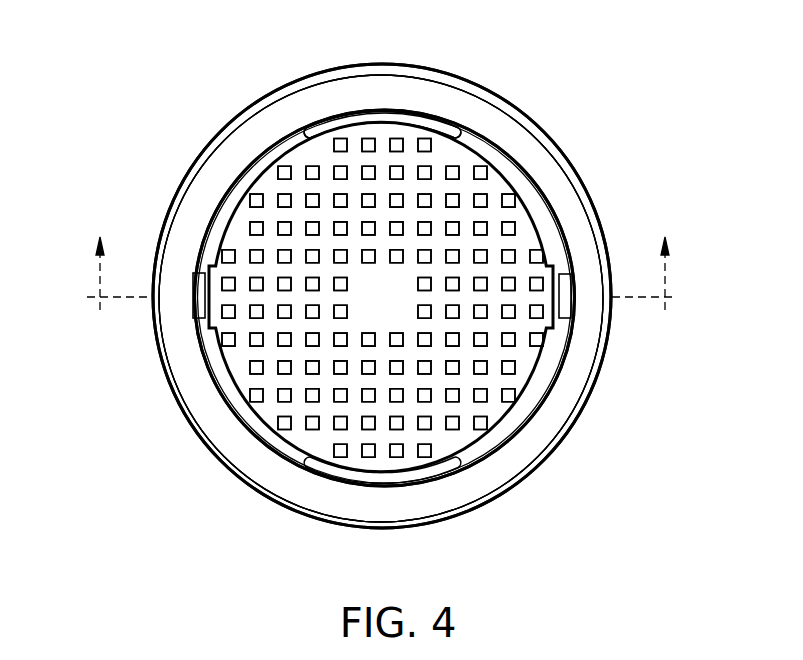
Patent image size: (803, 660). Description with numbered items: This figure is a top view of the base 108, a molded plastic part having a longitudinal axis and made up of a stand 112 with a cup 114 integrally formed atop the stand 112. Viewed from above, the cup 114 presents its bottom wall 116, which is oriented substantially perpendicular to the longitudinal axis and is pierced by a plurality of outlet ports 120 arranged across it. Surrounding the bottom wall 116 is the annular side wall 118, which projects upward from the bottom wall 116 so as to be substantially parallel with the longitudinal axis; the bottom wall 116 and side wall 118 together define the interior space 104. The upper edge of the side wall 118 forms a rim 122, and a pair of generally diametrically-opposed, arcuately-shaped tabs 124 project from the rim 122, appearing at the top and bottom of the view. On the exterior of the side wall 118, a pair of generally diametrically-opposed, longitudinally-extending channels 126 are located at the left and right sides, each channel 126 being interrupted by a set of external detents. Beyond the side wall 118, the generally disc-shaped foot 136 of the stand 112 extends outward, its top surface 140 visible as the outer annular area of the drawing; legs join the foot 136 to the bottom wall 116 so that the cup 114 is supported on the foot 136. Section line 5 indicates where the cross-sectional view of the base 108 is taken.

The interior space 104 is at (366, 287).
The base 108 is at (156, 82).
The stand 112 is at (544, 106).
The cup 114 is at (544, 171).
The bottom wall 116 is at (527, 360).
The side wall 118 is at (532, 415).
The outlet ports 120 is at (540, 230).
The rim 122 is at (465, 127).
The tabs 124 is at (388, 118).
The channels 126 is at (200, 287).
The foot 136 is at (214, 416).
The top surface 140 is at (500, 463).
The section line 5- 5 is at (386, 282).